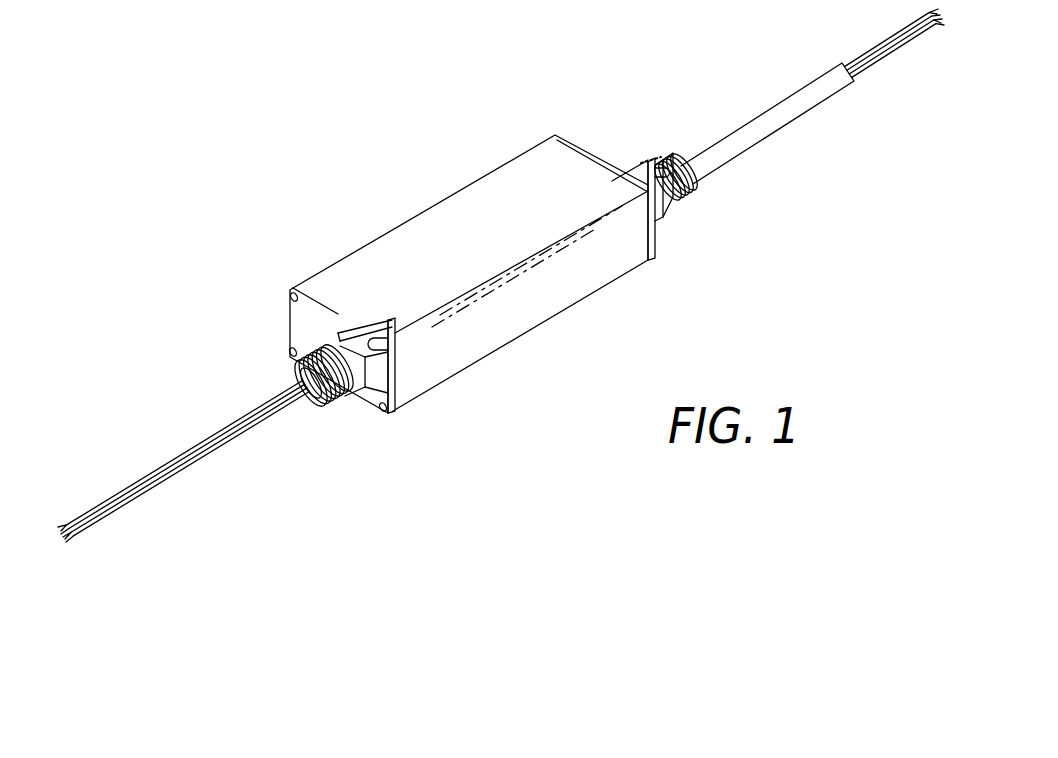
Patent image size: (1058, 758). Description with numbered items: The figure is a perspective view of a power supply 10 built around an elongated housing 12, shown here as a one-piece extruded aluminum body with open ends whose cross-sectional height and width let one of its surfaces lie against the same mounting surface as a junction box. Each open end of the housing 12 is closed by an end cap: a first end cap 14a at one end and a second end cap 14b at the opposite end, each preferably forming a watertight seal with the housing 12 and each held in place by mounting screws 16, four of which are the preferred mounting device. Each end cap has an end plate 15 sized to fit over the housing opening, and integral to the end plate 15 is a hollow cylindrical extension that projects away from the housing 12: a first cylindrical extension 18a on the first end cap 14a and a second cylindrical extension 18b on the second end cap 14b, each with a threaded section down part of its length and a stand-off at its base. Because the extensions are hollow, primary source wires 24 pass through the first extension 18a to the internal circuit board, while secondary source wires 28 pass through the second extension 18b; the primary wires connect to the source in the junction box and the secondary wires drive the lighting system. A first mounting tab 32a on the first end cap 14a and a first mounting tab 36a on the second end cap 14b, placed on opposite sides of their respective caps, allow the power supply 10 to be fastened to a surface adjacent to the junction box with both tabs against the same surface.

The power supply 10 is at (338, 137).
The housing 12 is at (500, 158).
The first end cap 14a is at (318, 296).
The second end cap 14b is at (598, 143).
The end plate 15 is at (295, 310).
The mounting screws 16 is at (292, 289).
The first cylindrical extension 18a is at (278, 382).
The second cylindrical extension 18b is at (699, 195).
The primary source wires 24 is at (152, 468).
The secondary source wires 28 is at (813, 78).
The first mounting tab 32a is at (393, 338).
The first mounting tab 36a is at (662, 155).